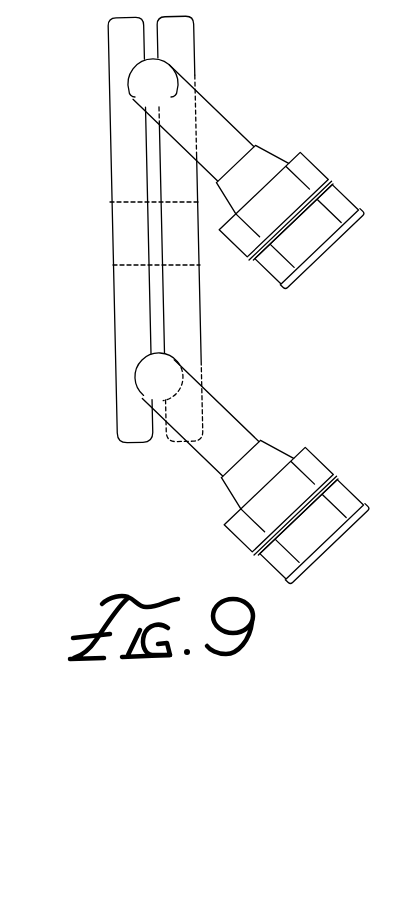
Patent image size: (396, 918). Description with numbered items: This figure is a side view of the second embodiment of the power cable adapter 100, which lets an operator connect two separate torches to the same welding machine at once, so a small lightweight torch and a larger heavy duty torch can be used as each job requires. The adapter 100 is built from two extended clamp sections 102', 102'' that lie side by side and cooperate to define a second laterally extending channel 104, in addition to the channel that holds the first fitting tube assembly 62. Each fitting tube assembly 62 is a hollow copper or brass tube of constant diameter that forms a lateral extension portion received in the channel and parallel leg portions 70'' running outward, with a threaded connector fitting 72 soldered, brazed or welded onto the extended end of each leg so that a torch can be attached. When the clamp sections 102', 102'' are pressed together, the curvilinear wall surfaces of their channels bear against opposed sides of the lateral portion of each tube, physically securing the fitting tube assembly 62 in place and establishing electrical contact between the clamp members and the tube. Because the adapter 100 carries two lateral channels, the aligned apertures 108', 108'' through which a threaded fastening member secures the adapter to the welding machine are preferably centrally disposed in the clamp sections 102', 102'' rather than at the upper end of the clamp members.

The power cable adapter 100 is at (243, 316).
The extended clamp section 102' is at (241, 227).
The extended clamp section 102'' is at (89, 231).
The second laterally extending channel 104 is at (129, 84).
The aligned aperture 108' is at (187, 296).
The aligned aperture 108'' is at (112, 213).
The parallel leg portion 70'' is at (214, 417).
The fitting tube assembly 62 is at (204, 466).
The threaded connector fitting 72 is at (320, 456).